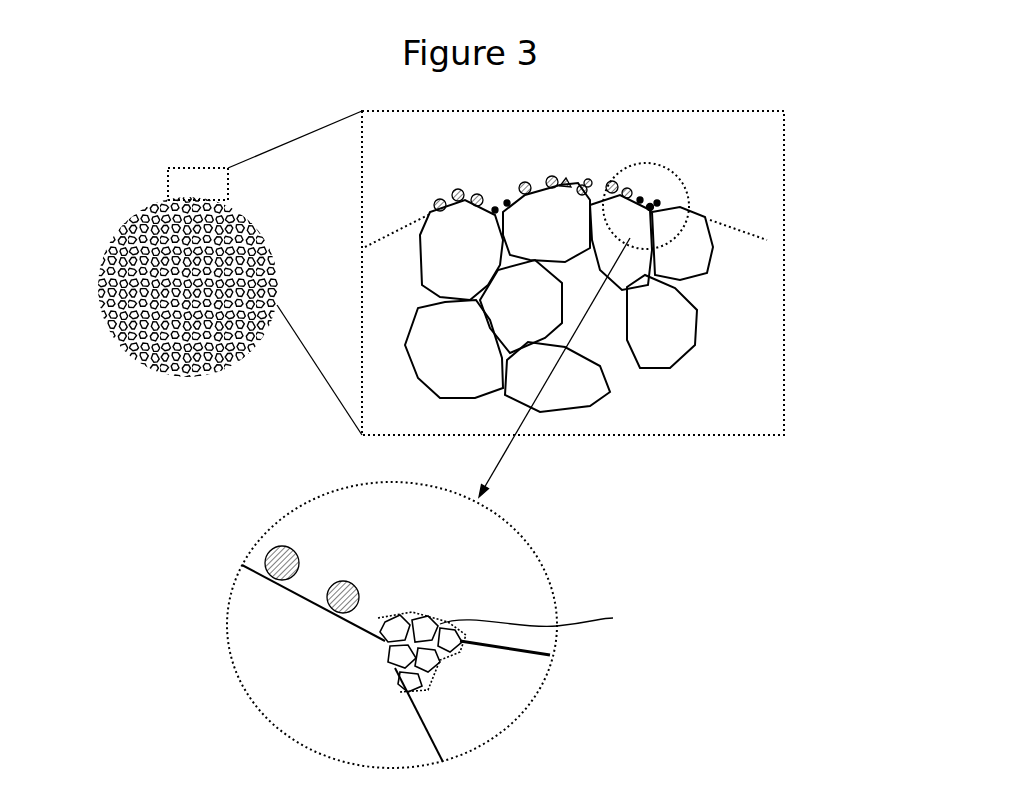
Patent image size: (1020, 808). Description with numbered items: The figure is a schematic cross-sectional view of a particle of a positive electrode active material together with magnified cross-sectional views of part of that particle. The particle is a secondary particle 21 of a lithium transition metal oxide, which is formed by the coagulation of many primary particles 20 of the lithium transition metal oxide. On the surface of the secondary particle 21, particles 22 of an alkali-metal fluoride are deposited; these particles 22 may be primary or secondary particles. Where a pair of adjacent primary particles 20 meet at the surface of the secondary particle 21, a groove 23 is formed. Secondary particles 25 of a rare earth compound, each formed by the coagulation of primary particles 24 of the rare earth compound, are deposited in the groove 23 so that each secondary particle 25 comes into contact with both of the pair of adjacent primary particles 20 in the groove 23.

The primary particles of the lithium transition metal oxide 20 is at (228, 193).
The secondary particle of a lithium transition metal oxide 21 is at (107, 176).
The particles of an alkali-metal fluoride 22 is at (452, 190).
The groove 23 is at (650, 188).
The primary particles of the rare earth compound 24 is at (690, 197).
The secondary particles of a rare earth compound 25 is at (544, 613).